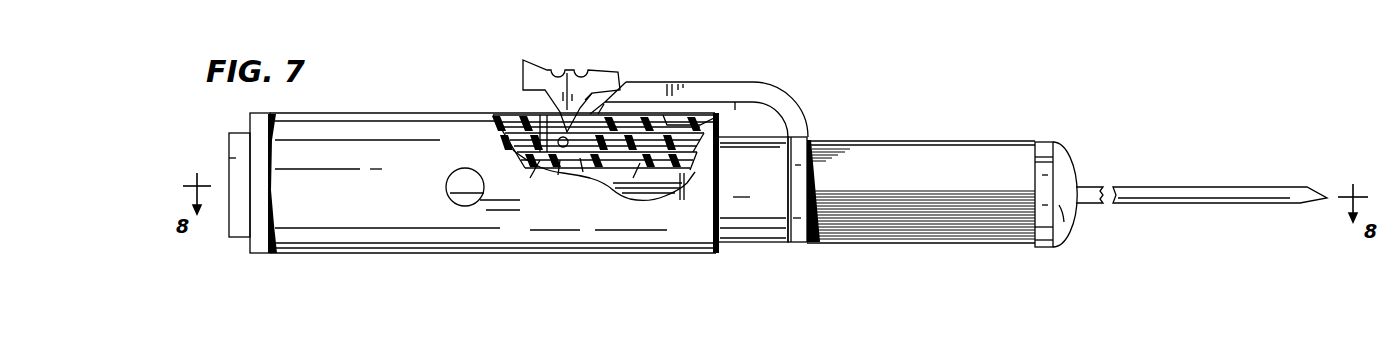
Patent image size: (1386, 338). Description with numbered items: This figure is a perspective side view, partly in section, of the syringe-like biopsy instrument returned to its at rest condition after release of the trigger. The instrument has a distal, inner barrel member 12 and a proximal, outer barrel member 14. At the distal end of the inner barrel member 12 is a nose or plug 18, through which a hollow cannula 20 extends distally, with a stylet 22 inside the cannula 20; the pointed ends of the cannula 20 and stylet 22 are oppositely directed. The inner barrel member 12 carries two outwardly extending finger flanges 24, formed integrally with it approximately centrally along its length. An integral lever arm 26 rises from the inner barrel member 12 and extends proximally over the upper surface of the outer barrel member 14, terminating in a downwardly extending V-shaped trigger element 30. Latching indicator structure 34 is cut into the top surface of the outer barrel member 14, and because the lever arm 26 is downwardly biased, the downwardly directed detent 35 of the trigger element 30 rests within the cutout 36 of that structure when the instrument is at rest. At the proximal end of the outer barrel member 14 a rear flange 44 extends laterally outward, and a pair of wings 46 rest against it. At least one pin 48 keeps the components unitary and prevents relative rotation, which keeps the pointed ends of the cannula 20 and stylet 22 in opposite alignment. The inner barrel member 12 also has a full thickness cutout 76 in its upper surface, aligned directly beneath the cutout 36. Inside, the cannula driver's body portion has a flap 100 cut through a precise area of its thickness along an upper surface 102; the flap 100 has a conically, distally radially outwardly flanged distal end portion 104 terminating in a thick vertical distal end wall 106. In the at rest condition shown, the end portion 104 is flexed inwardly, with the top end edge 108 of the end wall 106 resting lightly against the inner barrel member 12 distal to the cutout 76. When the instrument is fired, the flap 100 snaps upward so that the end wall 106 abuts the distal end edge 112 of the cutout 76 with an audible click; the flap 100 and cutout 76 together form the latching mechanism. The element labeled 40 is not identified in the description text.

The inner barrel member 12 is at (948, 133).
The outer barrel member 14 is at (424, 106).
The plug 18 is at (1061, 128).
The cannula 20 is at (1090, 198).
The stylet 22 is at (1310, 206).
The finger flange 24 is at (800, 210).
The lever arm 26 is at (783, 112).
The trigger element 30 is at (550, 113).
The latching indicator structure 34 is at (656, 96).
The detent 35 is at (588, 92).
The cutout 36 is at (540, 160).
The release button 40 is at (566, 68).
The rear flange 44 is at (265, 242).
The wings 46 is at (237, 157).
The pin 48 is at (471, 182).
The cutout 76 is at (580, 158).
The flap 100 is at (640, 163).
The upper surface 102 is at (560, 160).
The distal end portion 104 is at (700, 163).
The vertical distal end wall 106 is at (697, 152).
The top end edge 108 is at (713, 128).
The distal end edge 112 is at (599, 114).